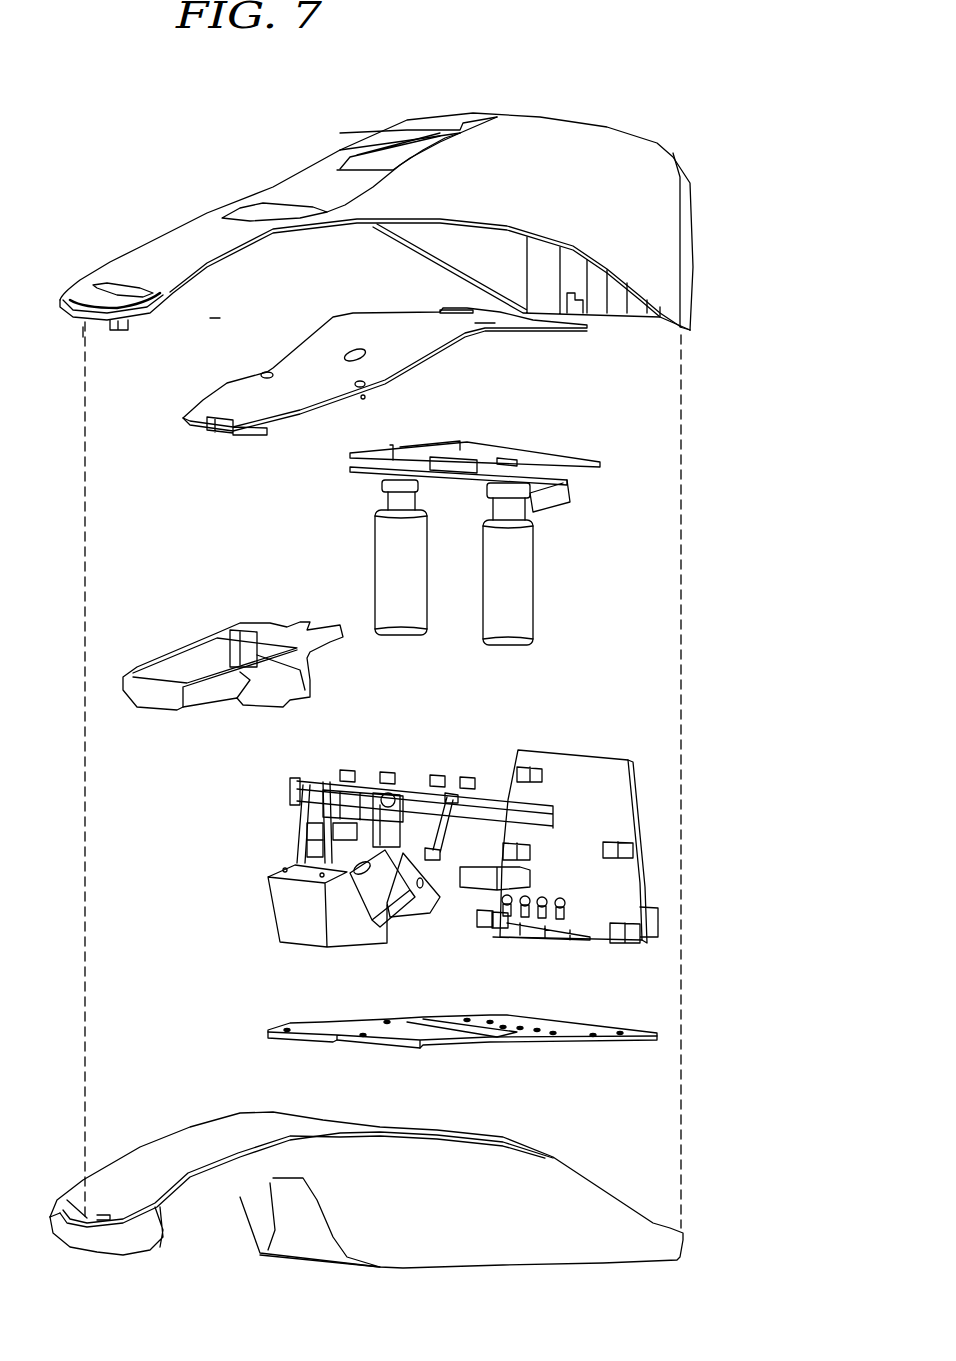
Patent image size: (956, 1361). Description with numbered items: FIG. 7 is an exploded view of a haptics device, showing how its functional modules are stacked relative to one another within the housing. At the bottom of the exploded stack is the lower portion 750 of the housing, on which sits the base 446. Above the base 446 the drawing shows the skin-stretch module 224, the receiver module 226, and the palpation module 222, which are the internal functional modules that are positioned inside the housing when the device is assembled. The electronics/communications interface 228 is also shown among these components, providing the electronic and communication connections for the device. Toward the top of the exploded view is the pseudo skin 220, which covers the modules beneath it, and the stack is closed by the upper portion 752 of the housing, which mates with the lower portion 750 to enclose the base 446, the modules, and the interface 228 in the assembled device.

The upper portion 752 is at (147, 247).
The pseudo skin 220 is at (203, 403).
The palpation module 222 is at (543, 530).
The skin-stretch module 224 is at (185, 647).
The receiver module 226 is at (300, 822).
The electronics/communications interface 228 is at (577, 752).
The base 446 is at (293, 1027).
The lower portion 750 is at (470, 1247).